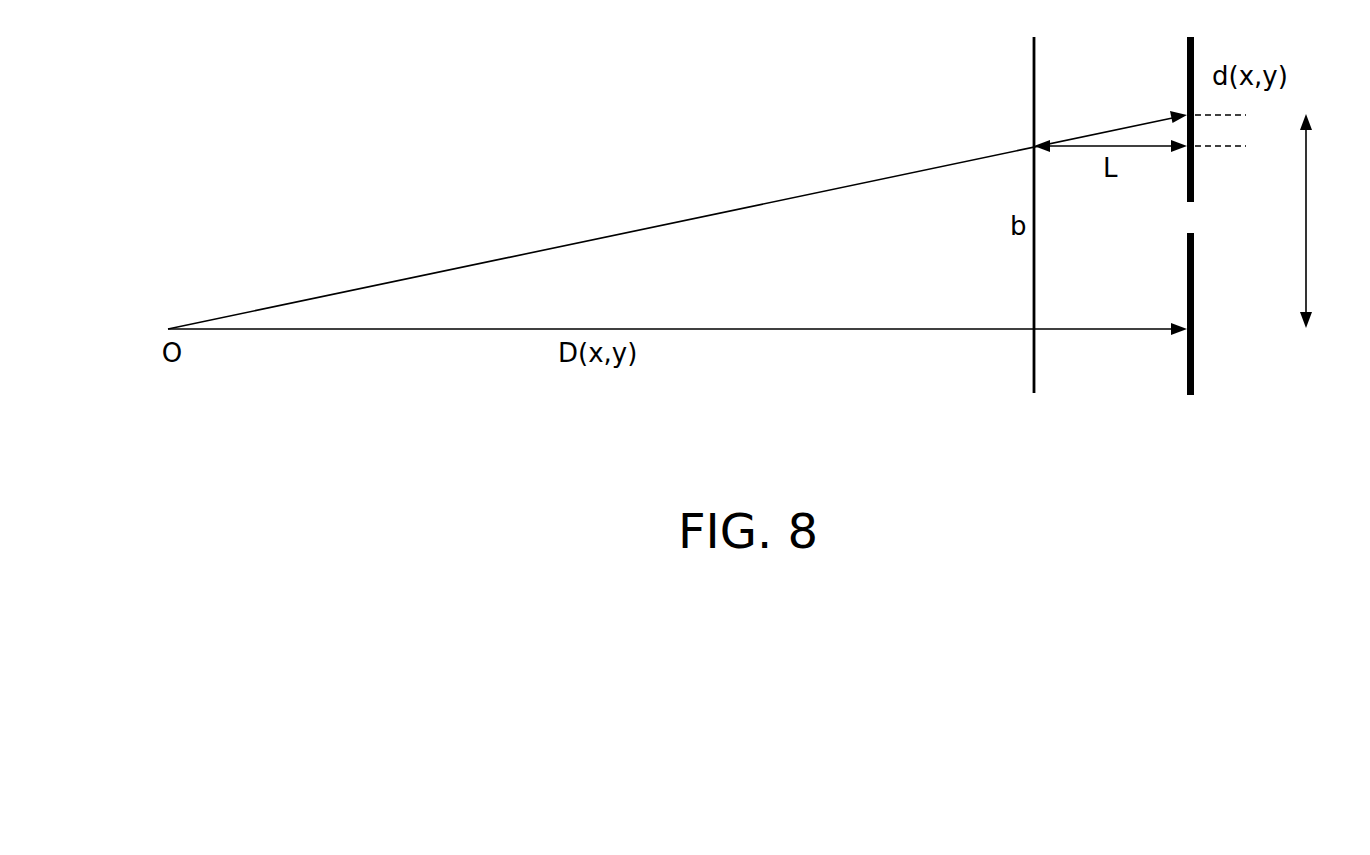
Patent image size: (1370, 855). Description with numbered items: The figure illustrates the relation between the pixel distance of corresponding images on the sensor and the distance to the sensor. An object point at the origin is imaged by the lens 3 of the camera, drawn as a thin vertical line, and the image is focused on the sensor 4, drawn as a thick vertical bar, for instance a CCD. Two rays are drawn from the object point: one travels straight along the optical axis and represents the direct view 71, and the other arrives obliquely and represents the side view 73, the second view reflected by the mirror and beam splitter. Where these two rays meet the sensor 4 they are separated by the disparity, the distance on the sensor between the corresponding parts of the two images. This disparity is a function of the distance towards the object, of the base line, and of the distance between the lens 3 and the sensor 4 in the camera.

The lens 3 is at (1034, 398).
The sensor 4 is at (1222, 260).
The direct view 71 is at (1226, 314).
The side view 73 is at (1227, 122).